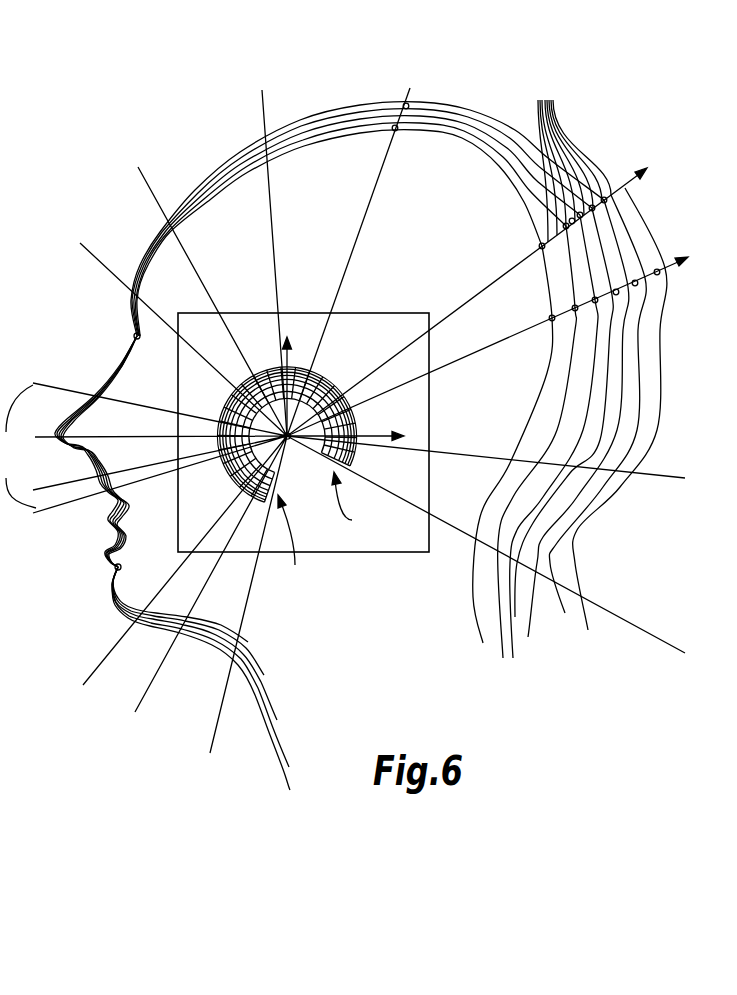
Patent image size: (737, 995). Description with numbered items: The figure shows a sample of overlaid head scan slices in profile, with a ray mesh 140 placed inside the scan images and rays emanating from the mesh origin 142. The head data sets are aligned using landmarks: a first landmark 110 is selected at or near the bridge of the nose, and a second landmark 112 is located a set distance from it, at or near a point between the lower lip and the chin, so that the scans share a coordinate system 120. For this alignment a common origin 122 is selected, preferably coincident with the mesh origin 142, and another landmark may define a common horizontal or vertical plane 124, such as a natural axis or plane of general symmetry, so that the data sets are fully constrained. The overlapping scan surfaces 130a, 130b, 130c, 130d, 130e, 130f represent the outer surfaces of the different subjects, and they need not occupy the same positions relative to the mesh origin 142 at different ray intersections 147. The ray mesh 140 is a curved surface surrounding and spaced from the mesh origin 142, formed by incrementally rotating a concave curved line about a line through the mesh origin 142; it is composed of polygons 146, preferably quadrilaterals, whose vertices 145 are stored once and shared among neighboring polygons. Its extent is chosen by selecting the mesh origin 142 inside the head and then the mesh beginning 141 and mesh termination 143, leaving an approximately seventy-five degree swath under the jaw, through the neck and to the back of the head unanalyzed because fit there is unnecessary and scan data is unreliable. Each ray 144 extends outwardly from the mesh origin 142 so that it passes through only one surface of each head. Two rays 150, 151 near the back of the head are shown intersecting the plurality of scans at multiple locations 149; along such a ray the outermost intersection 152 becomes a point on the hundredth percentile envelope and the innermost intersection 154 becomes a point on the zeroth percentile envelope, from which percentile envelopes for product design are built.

The first landmark 110 is at (134, 336).
The second landmark 112 is at (115, 568).
The coordinate system 120 is at (378, 432).
The common origin 122 is at (317, 457).
The common horizontal or vertical plane 124 is at (366, 313).
The scan surface 130a is at (68, 372).
The scan surface 130b is at (69, 386).
The scan surface 130c is at (0, 245).
The scan surface 130d is at (0, 270).
The scan surface 130e is at (0, 350).
The scan surface 130f is at (3, 283).
The ray mesh 140 is at (328, 376).
The mesh beginning 141 is at (294, 541).
The mesh origin 142 is at (290, 443).
The mesh termination 143 is at (352, 520).
The ray 144 is at (53, 483).
The vertex 145 is at (296, 366).
The polygon 146 is at (240, 482).
The ray intersection 147 is at (406, 106).
The intersection locations 149 is at (570, 159).
The ray 150 is at (620, 187).
The ray 151 is at (663, 268).
The outermost intersection 152 is at (657, 270).
The innermost intersection 154 is at (550, 318).